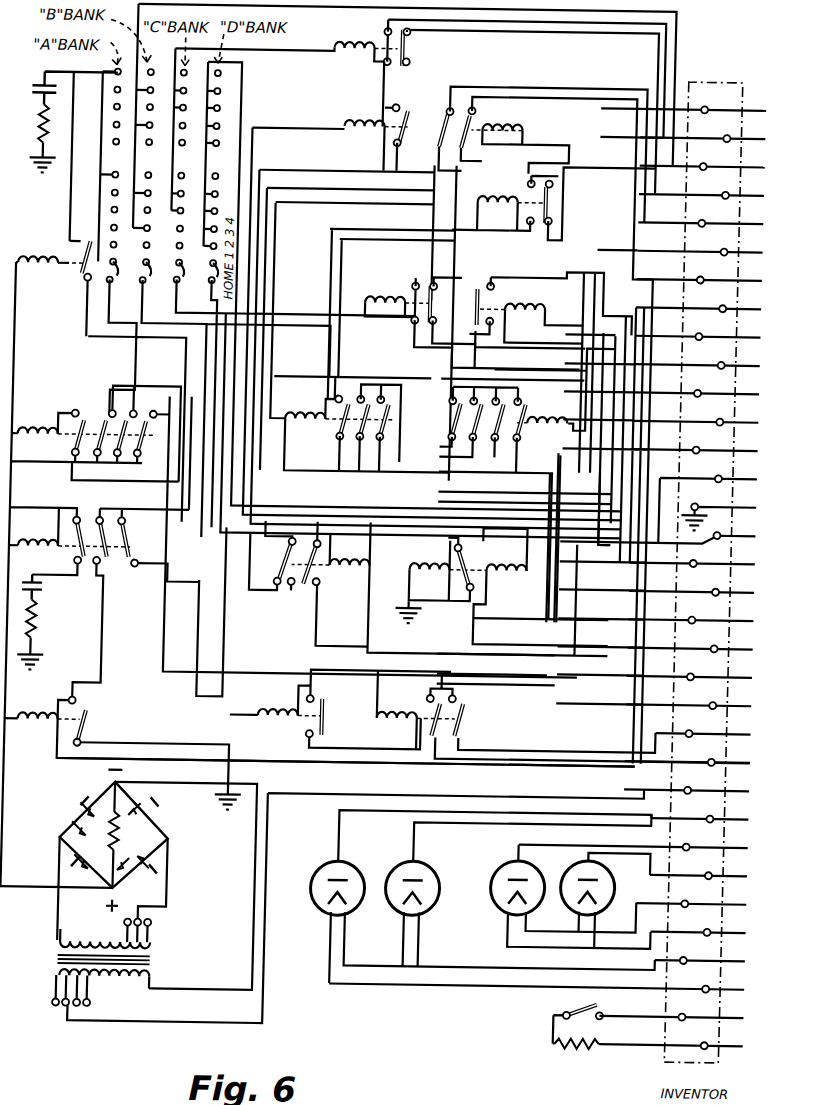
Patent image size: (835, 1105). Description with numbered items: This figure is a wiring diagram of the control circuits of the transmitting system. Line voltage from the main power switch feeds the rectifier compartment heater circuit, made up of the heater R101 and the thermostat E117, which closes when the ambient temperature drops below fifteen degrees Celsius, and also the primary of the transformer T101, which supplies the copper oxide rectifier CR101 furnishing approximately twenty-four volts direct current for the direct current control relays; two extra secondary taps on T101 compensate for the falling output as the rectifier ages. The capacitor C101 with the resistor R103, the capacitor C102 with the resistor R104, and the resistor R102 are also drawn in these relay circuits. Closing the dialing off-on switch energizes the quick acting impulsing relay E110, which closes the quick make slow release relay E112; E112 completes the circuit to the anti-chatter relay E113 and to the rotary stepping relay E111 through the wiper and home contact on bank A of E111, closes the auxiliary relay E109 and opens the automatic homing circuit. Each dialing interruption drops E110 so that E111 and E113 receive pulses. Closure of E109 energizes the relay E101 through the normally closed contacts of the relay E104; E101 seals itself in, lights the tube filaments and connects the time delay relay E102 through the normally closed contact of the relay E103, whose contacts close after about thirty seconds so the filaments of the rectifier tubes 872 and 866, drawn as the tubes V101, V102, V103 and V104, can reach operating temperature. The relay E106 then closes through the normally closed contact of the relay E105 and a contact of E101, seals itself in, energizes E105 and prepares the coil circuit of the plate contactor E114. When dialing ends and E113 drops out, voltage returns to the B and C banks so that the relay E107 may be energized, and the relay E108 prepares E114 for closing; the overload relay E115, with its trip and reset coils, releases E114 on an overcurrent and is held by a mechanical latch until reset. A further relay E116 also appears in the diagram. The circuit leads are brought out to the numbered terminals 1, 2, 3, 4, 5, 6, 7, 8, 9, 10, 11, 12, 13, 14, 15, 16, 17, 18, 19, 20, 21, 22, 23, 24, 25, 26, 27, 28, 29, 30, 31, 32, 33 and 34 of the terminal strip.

The capacitor C101 is at (23, 93).
The resistor R103 is at (24, 135).
The rotary stepping relay E111 is at (53, 286).
The anti-chatter relay E113 is at (96, 433).
The quick make slow release relay E112 is at (103, 604).
The capacitor C102 is at (46, 600).
The resistor R104 is at (46, 633).
The quick acting impulsing relay E110 is at (319, 748).
The copper oxide rectifier CR101 is at (110, 791).
The resistor R102 is at (115, 834).
The transformer T101 is at (123, 962).
The relay E107 is at (372, 73).
The time delay relay E102 is at (375, 135).
The relay E104 is at (546, 196).
The relay E105 is at (554, 204).
The auxiliary relay E109 is at (473, 322).
The relay E116 is at (551, 307).
The relay E106 is at (361, 424).
The relay E101 is at (525, 477).
The relay E103 is at (402, 588).
The overload relay E115 is at (503, 569).
The relay E108 is at (340, 709).
The plate contactor E114 is at (564, 717).
The rectifier tube V101 is at (330, 909).
The rectifier tube V102 is at (401, 908).
The rectifier tube V103 is at (504, 906).
The rectifier tube V104 is at (635, 861).
The rectifier tube 872 is at (374, 854).
The rectifier tube 866 is at (546, 854).
The thermostat E117 is at (578, 1003).
The heater R101 is at (592, 1046).
The A bank A is at (719, 66).
The terminal G22 1 is at (717, 104).
The terminal G6 2 is at (711, 133).
The terminal C9 3 is at (709, 161).
The terminal C7 4 is at (709, 190).
The terminal P1 5 is at (708, 218).
The terminal G21 6 is at (713, 246).
The terminal P37 7 is at (713, 275).
The terminal F5 8 is at (705, 303).
The terminal P20 9 is at (711, 331).
The terminal F1 10 is at (703, 360).
The terminal P2 11 is at (704, 388).
The terminal P4 12 is at (703, 417).
The terminal G24 13 is at (708, 445).
The terminal G19 14 is at (721, 502).
The terminal P19 15 is at (732, 510).
The terminal P26 16 is at (671, 530).
The terminal P30 17 is at (705, 571).
The terminal G13 18 is at (705, 588).
The terminal P17 19 is at (704, 615).
The terminal F18 20 is at (702, 643).
The terminal G9 21 is at (698, 672).
The terminal G14 22 is at (702, 700).
The terminal P14 23 is at (716, 729).
The terminal P15 24 is at (701, 757).
The terminal P16 25 is at (700, 785).
The terminal P18 26 is at (713, 815).
The terminal P22 27 is at (646, 842).
The terminal P23 28 is at (712, 871).
The terminal P10 29 is at (704, 899).
The terminal P11 30 is at (711, 928).
The terminal P13 31 is at (713, 956).
The terminal P12 32 is at (550, 983).
The terminal G24 33 is at (685, 1013).
The terminal G19 34 is at (684, 1041).